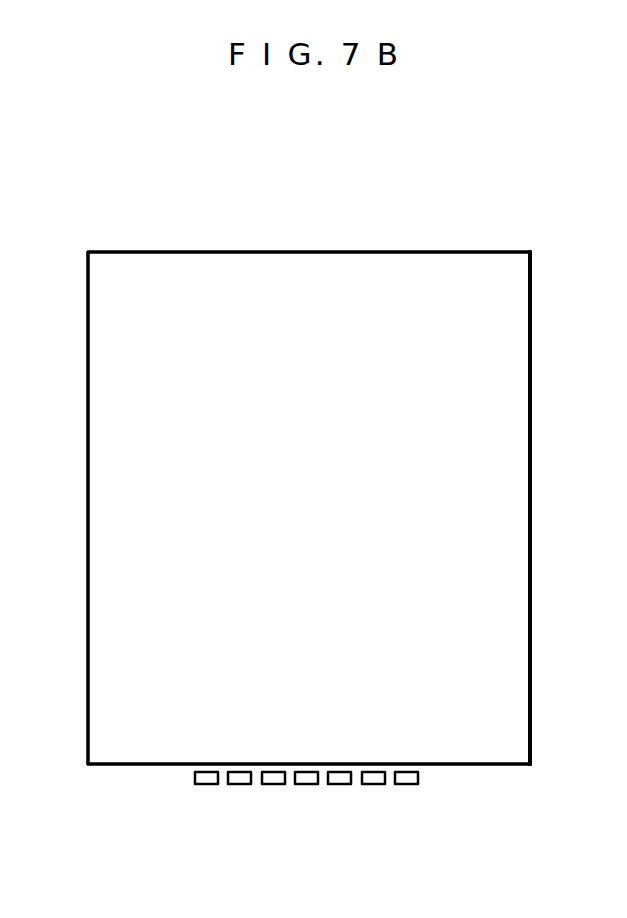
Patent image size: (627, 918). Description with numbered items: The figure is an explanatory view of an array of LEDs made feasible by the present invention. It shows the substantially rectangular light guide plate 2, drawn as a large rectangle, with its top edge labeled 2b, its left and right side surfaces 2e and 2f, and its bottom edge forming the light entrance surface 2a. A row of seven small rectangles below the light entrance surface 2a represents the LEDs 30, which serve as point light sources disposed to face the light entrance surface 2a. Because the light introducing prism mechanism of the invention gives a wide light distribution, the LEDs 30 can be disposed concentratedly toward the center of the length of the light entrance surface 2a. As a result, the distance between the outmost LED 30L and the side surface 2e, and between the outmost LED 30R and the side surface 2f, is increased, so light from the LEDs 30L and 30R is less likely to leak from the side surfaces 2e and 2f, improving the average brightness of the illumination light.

The light guide plate 2 is at (397, 172).
The light entrance surface 2a is at (483, 765).
The top surface of housing 2b is at (238, 252).
The side surface 2e is at (88, 450).
The side surface 2f is at (530, 632).
The LEDs 30 is at (340, 784).
The outmost LED 30L is at (208, 784).
The outmost LED 30R is at (408, 784).